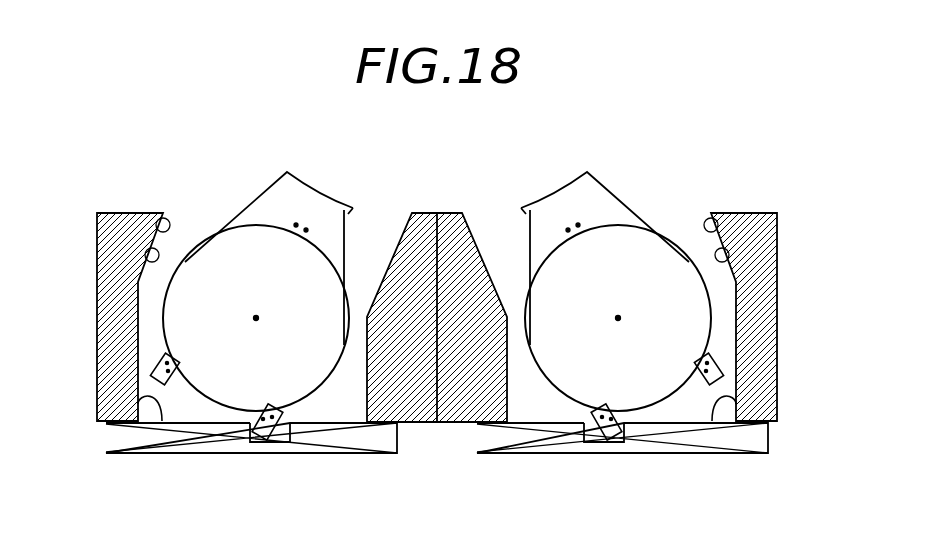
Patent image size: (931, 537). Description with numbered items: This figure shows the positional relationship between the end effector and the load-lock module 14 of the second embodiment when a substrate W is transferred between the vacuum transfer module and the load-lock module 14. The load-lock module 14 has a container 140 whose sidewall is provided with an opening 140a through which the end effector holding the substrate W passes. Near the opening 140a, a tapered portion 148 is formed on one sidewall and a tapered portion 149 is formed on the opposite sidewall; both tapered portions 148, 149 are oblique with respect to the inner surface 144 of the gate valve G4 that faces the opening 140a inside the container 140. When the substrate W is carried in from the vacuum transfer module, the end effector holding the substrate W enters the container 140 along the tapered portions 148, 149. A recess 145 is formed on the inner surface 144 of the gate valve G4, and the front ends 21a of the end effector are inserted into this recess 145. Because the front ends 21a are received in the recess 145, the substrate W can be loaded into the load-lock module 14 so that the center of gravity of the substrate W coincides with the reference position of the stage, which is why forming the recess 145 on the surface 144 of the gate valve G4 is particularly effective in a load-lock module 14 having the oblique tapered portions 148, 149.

The load-lock module 14 is at (125, 212).
The container 140 is at (97, 333).
The opening 140a is at (158, 223).
The tapered portion 148 is at (146, 255).
The substrate W is at (165, 299).
The tapered portion 149 is at (397, 245).
The inner surface of gate valve G4 144 is at (140, 403).
The gate valve G4 is at (211, 453).
The front ends of end effector 21a is at (262, 442).
The recess 145 is at (294, 442).